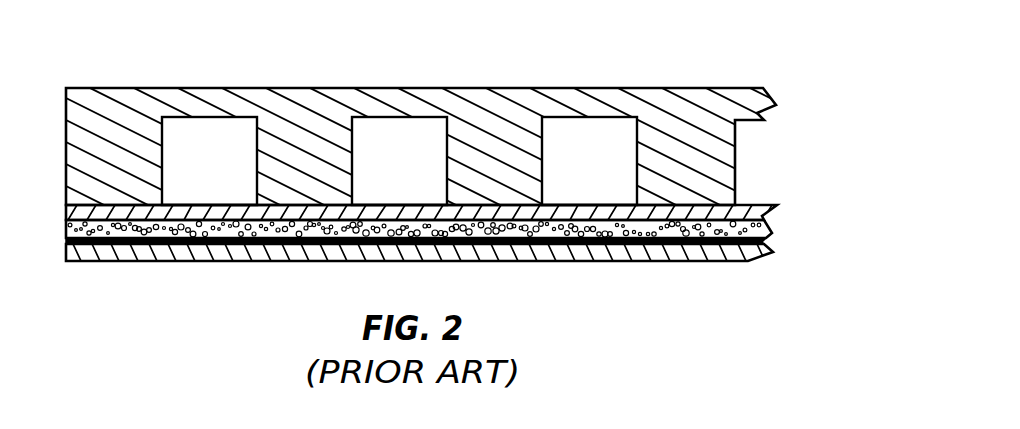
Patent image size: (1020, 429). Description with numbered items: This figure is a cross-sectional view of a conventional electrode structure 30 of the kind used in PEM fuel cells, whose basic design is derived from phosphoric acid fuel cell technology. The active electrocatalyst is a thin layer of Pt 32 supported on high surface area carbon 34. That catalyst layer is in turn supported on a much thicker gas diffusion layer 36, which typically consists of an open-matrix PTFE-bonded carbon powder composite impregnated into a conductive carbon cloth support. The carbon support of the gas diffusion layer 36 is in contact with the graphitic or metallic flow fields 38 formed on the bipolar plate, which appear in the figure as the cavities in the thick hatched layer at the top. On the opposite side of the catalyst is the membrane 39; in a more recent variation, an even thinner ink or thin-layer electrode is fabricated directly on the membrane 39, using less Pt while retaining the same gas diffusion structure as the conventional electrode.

The conventional electrode structure 30 is at (463, 150).
The flow fields 38 is at (735, 163).
The gas diffusion layer 36 is at (765, 205).
The high surface area carbon 34 is at (768, 233).
The thin layer of Pt 32 is at (763, 243).
The membrane 39 is at (758, 258).